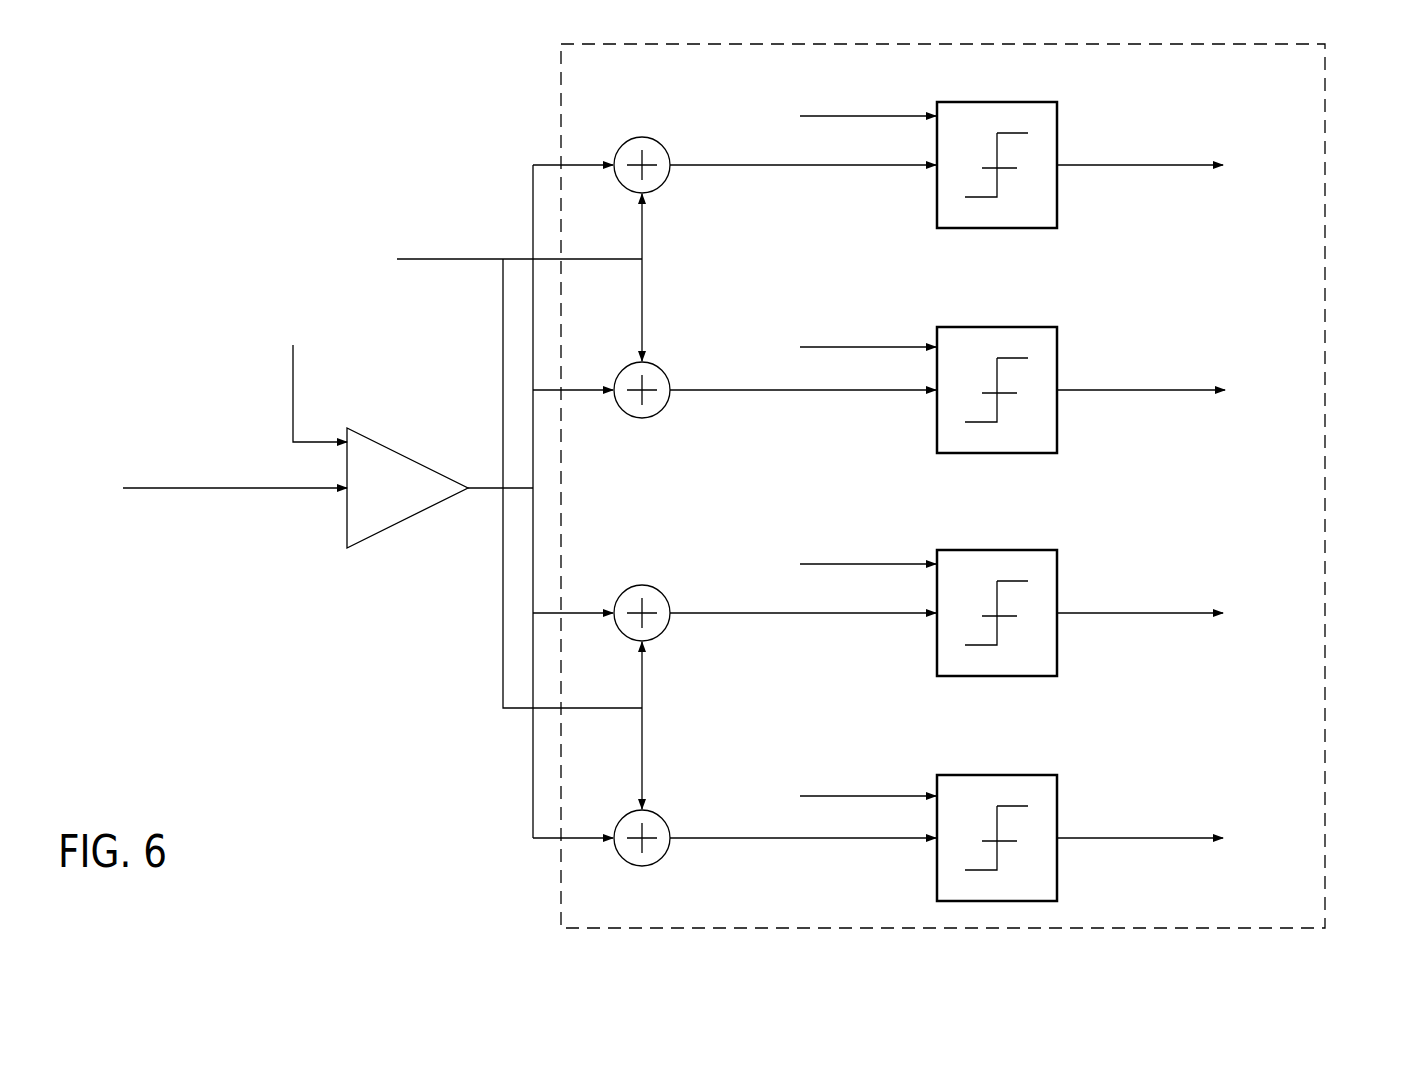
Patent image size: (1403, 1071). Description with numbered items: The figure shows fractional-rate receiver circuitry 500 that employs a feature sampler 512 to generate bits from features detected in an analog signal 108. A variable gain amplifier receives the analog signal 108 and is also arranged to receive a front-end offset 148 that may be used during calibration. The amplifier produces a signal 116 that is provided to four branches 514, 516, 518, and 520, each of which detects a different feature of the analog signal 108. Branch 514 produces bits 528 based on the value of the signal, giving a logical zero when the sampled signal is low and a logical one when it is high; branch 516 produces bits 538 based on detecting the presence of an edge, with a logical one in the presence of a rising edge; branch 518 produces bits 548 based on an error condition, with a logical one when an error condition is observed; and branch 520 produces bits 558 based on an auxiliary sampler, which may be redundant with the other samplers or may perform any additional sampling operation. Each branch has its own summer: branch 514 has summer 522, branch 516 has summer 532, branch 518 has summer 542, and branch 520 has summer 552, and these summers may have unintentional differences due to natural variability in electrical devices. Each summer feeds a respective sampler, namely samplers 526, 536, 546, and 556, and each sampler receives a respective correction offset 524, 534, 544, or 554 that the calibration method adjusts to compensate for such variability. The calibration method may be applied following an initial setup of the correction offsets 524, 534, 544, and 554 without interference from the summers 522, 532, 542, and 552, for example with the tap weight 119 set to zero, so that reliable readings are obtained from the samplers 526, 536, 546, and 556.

The fractional-rate receiver circuitry 500 is at (262, 108).
The analog signal 108 is at (228, 490).
The front-end offset 148 is at (293, 393).
The tap weight 119 is at (450, 260).
The signal 116 is at (503, 626).
The feature sampler 512 is at (1325, 112).
The branch 514 is at (1290, 161).
The branch 516 is at (1293, 360).
The branch 518 is at (1290, 556).
The branch 520 is at (1293, 773).
The summer 522 is at (663, 186).
The correction offset 524 is at (860, 117).
The sampler 526 is at (997, 229).
The bits 528 is at (1132, 167).
The summer 532 is at (618, 371).
The correction offset 534 is at (860, 348).
The sampler 536 is at (997, 454).
The bits 538 is at (1133, 392).
The summer 542 is at (665, 635).
The correction offset 544 is at (860, 565).
The sampler 546 is at (997, 677).
The bits 548 is at (1132, 615).
The summer 552 is at (620, 818).
The correction offset 554 is at (860, 797).
The sampler 556 is at (997, 774).
The bits 558 is at (1072, 840).